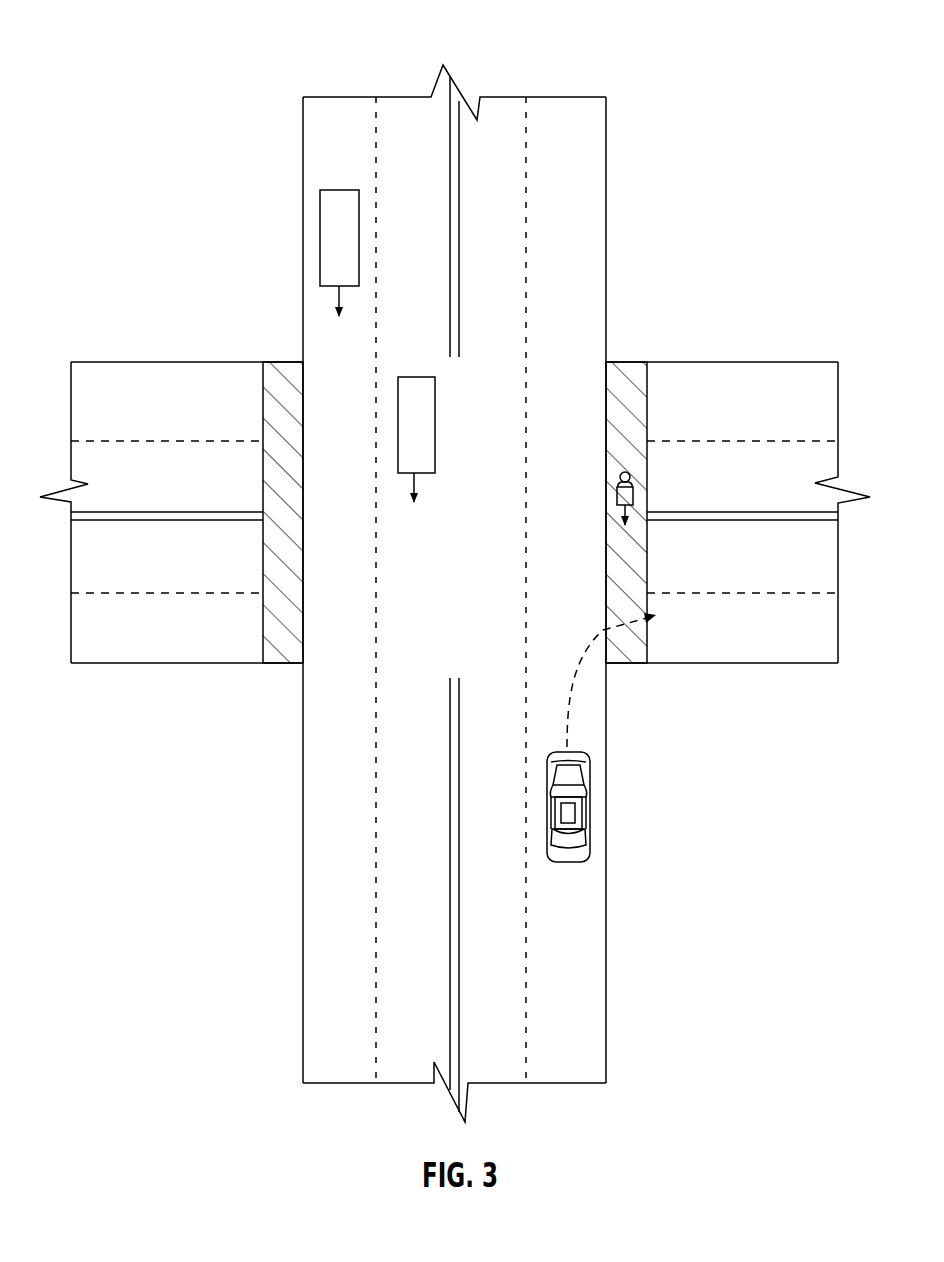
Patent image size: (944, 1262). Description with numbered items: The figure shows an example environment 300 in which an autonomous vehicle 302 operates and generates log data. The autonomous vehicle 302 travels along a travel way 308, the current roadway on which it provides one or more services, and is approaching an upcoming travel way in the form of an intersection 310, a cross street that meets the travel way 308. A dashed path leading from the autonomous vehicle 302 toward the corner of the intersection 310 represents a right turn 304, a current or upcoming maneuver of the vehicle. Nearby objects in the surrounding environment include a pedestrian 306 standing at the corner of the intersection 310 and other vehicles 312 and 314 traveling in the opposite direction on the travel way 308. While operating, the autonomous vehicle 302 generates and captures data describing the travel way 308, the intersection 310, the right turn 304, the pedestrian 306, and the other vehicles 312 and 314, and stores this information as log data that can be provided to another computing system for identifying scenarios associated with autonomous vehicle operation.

The environment 300 is at (281, 40).
The autonomous vehicle 302 is at (590, 782).
The right turn 304 is at (567, 707).
The pedestrian 306 is at (637, 487).
The travel way 308 is at (588, 893).
The intersection 310 is at (500, 578).
The other vehicle 312 is at (397, 428).
The other vehicle 314 is at (320, 233).